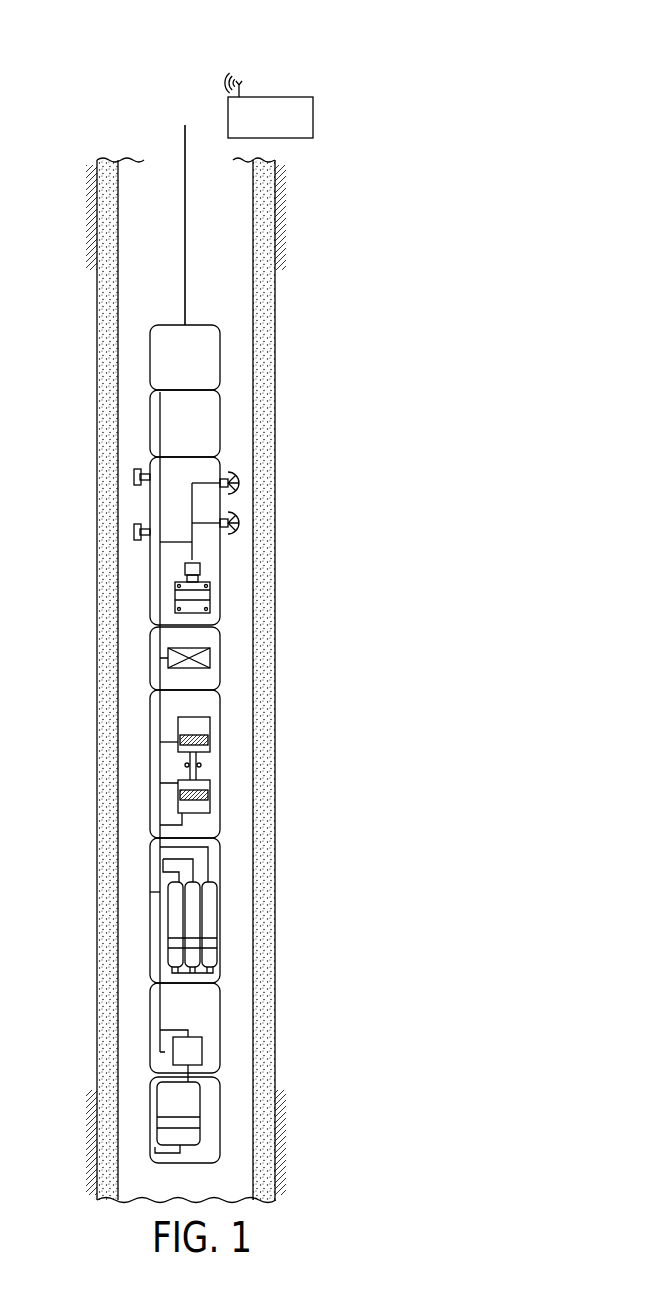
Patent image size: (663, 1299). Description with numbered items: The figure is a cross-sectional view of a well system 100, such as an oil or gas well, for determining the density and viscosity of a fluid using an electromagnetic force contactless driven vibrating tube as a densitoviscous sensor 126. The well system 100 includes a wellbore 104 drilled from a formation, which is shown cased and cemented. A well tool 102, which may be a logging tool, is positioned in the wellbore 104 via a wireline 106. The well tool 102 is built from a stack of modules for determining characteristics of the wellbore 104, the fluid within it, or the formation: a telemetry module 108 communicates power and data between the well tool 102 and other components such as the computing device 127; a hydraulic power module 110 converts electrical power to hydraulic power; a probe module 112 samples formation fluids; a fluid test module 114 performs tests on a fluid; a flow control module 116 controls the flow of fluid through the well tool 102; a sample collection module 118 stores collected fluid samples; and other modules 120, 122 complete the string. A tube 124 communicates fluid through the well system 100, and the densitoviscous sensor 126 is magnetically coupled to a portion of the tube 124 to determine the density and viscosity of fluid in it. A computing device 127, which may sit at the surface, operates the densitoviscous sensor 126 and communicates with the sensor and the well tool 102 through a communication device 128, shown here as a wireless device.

The well system 100 is at (148, 133).
The well tool 102 is at (203, 320).
The wellbore 104 is at (117, 780).
The wireline 106 is at (188, 203).
The telemetry module 108 is at (188, 348).
The hydraulic power module 110 is at (188, 418).
The probe module 112 is at (198, 552).
The fluid test module 114 is at (198, 680).
The flow control module 116 is at (210, 812).
The sample collection module 118 is at (218, 932).
The other module 120 is at (201, 1004).
The other module 122 is at (203, 1123).
The tube 124 is at (175, 1020).
The densitoviscous sensor 126 is at (203, 1053).
The computing device 127 is at (300, 112).
The communication device 128 is at (243, 67).